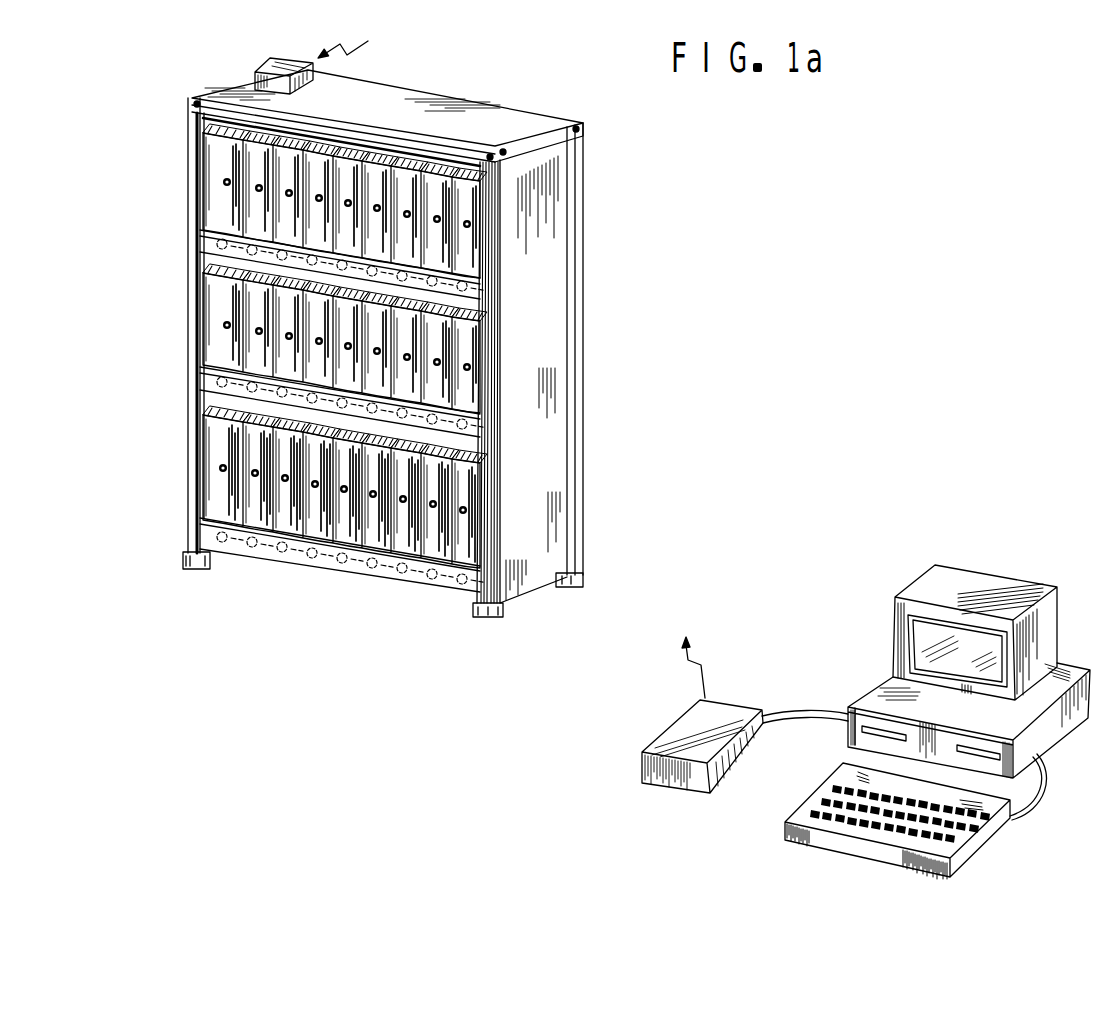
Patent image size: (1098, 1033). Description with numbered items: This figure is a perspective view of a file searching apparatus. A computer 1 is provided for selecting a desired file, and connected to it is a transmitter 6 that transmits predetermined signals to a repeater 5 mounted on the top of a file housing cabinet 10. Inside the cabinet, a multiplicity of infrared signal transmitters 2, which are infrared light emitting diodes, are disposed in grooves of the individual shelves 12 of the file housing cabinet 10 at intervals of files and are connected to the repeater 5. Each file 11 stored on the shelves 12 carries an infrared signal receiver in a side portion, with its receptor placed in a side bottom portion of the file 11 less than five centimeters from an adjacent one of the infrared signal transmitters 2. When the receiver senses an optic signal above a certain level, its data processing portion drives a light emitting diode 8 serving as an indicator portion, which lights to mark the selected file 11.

The computer 1 is at (997, 588).
The infrared signal transmitters 2 is at (382, 343).
The repeater 5 is at (256, 73).
The transmitter 6 is at (683, 733).
The light emitting diode 8 is at (226, 179).
The file housing cabinet 10 is at (578, 183).
The file 11 is at (227, 197).
The shelves 12 is at (480, 297).